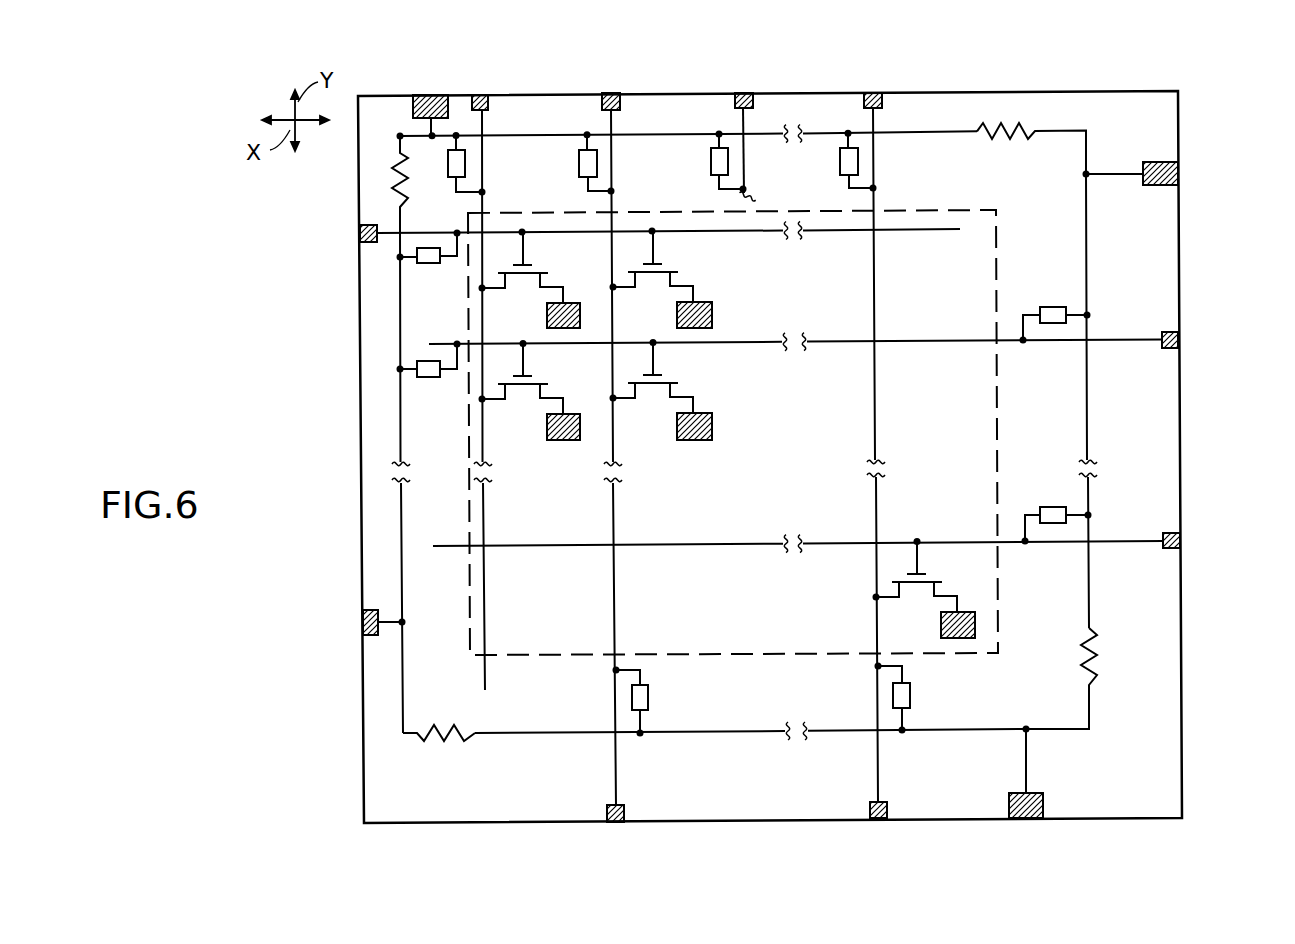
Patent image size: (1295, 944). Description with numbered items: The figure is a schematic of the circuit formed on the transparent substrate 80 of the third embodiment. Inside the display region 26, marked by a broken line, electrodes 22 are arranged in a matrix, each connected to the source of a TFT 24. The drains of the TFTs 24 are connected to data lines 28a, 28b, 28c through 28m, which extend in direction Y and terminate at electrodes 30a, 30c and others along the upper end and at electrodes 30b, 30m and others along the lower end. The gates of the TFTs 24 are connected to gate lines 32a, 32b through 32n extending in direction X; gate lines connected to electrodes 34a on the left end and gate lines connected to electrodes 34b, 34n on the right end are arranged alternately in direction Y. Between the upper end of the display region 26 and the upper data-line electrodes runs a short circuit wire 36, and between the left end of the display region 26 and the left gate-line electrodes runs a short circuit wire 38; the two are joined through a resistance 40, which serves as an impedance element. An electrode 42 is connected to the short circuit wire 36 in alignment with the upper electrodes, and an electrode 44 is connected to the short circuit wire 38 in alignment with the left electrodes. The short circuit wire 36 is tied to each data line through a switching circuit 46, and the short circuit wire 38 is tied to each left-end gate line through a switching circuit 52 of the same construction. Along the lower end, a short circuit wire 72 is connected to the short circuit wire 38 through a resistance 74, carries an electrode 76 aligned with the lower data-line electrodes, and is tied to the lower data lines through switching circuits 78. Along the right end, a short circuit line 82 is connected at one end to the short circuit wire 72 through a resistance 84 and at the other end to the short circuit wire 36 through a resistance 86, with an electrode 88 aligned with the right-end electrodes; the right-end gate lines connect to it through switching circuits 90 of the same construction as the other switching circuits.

The electrode 22 is at (547, 318).
The TFT 24 is at (540, 266).
The display region 26 is at (998, 407).
The data line 28a is at (484, 126).
The data line 28b is at (614, 126).
The data line 28c is at (742, 122).
The data line 28m is at (878, 120).
The electrode 30a is at (479, 95).
The electrode 30b is at (612, 93).
The electrode 30c is at (747, 93).
The electrode 30m is at (880, 818).
The gate line 32a is at (390, 236).
The gate line 32b is at (1150, 340).
The gate line 32n is at (1150, 541).
The electrode 34a is at (366, 242).
The electrode 34b is at (1180, 347).
The electrode 34n is at (1180, 548).
The short circuit wire 36 is at (918, 134).
The short circuit wire 38 is at (402, 512).
The resistance 40 is at (398, 168).
The electrode 42 is at (422, 95).
The electrode 44 is at (363, 624).
The switching circuit 46 is at (448, 168).
The switching circuit 52 is at (426, 263).
The short circuit wire 72 is at (511, 733).
The resistance 74 is at (456, 741).
The electrode 76 is at (1032, 818).
The switching circuit 78 is at (648, 698).
The transparent substrate 80 is at (1100, 91).
The short circuit line 82 is at (1089, 610).
The resistance 84 is at (1098, 662).
The resistance 86 is at (1002, 133).
The electrode 88 is at (1178, 176).
The switching circuit 90 is at (1048, 307).